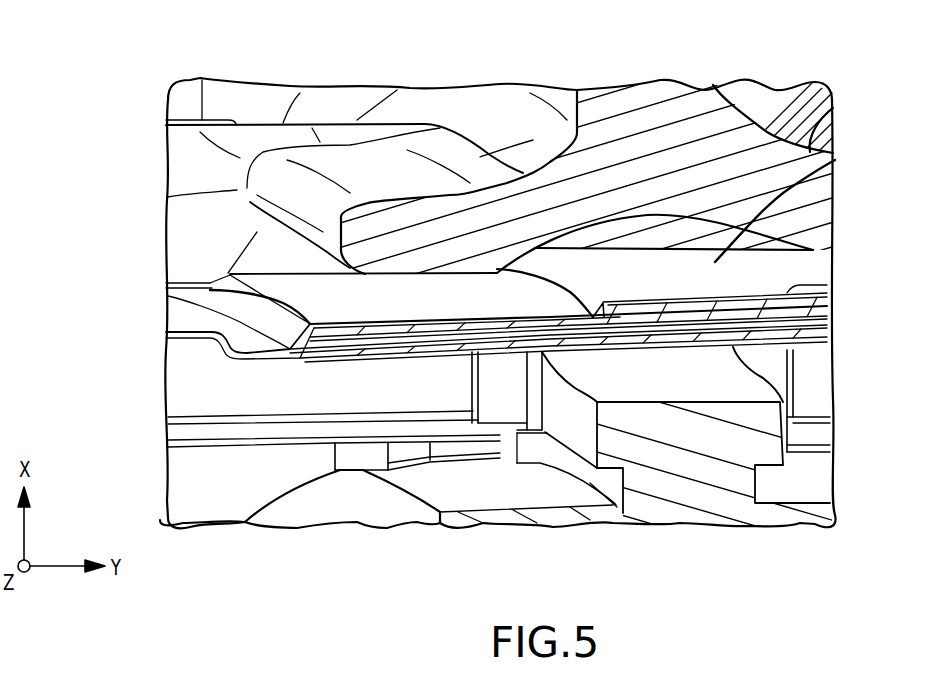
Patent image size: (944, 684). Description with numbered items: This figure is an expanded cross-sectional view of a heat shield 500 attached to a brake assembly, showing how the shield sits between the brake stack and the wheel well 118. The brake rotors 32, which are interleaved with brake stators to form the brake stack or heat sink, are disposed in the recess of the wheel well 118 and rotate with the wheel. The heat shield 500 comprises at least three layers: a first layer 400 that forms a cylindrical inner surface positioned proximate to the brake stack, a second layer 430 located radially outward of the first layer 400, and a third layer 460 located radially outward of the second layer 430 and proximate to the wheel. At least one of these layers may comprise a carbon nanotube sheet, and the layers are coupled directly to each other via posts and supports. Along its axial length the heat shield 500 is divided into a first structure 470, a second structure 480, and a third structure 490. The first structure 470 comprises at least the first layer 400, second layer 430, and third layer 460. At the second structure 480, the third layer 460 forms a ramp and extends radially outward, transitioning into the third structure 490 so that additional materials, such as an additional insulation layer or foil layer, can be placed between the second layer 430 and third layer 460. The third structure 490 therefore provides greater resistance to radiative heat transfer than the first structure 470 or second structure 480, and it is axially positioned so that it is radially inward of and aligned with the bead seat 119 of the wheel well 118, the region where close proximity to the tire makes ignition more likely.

The brake rotors 32 is at (705, 501).
The wheel well 118 is at (530, 207).
The bead seat 119 is at (833, 108).
The first layer 400 is at (347, 348).
The second layer 430 is at (228, 345).
The third layer 460 is at (210, 290).
The first structure 470 is at (351, 307).
The second structure 480 is at (603, 303).
The third structure 490 is at (833, 162).
The heat shield 500 is at (793, 287).